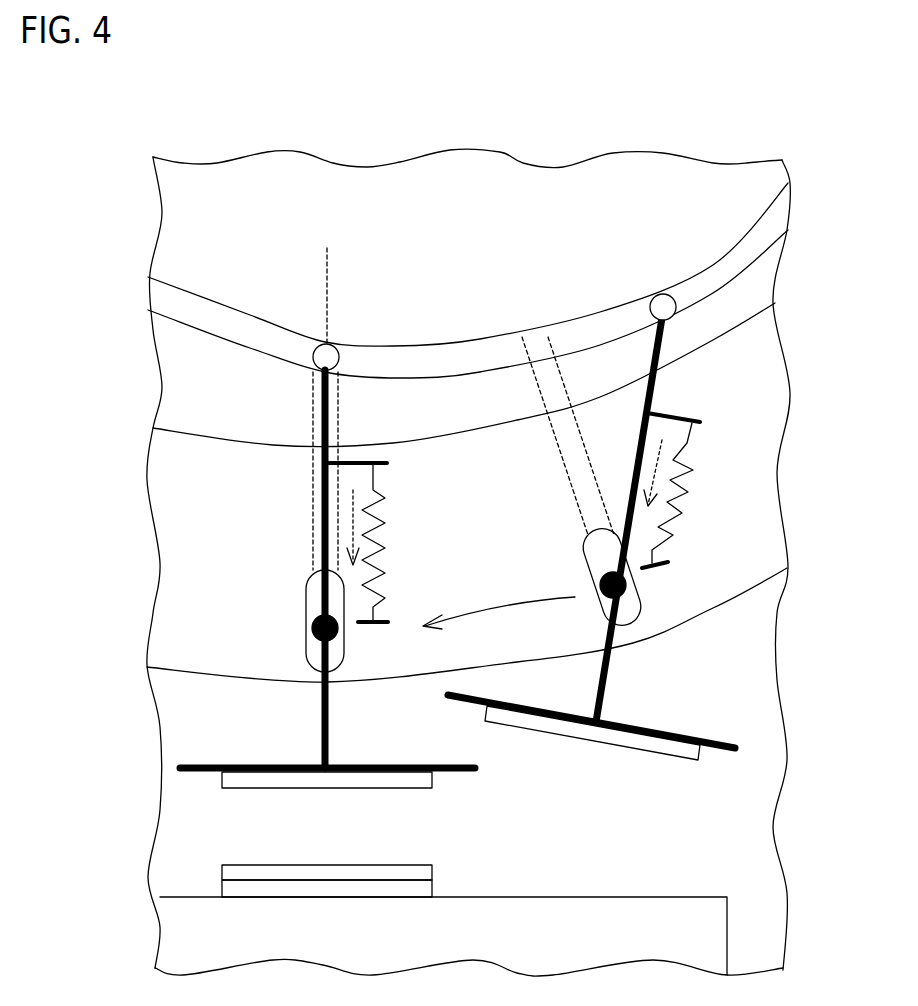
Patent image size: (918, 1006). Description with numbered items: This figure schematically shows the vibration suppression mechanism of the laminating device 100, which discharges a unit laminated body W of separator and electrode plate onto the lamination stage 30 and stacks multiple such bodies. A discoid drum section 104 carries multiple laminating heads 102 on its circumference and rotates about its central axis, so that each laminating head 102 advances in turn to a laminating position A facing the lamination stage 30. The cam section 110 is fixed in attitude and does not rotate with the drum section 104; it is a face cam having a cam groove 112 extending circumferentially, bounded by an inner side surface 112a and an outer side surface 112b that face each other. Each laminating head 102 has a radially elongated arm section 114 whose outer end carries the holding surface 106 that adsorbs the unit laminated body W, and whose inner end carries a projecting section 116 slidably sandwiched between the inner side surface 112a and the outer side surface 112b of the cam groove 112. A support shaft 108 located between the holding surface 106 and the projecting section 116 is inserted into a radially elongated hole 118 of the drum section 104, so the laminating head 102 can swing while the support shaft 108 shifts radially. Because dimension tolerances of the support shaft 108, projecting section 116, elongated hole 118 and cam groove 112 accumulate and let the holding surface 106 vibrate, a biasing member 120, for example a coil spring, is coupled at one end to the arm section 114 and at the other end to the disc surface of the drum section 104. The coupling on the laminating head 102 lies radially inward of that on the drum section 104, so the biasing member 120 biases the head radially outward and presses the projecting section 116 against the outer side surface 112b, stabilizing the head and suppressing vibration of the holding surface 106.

The laminating device 100 is at (141, 186).
The cam section 110 is at (717, 343).
The cam groove 112 is at (444, 280).
The inner side surface 112a is at (248, 317).
The outer side surface 112b is at (273, 363).
The drum section 104 is at (737, 597).
The projecting section 116 is at (648, 309).
The arm section 114 is at (643, 360).
The elongated hole 118 is at (640, 612).
The support shaft 108 is at (600, 593).
The biasing member 120 is at (693, 445).
The laminating head 102 is at (723, 748).
The holding surface 106 is at (702, 757).
The lamination stage 30 is at (727, 933).
The unit laminated body W is at (353, 788).
The laminating position A is at (327, 282).